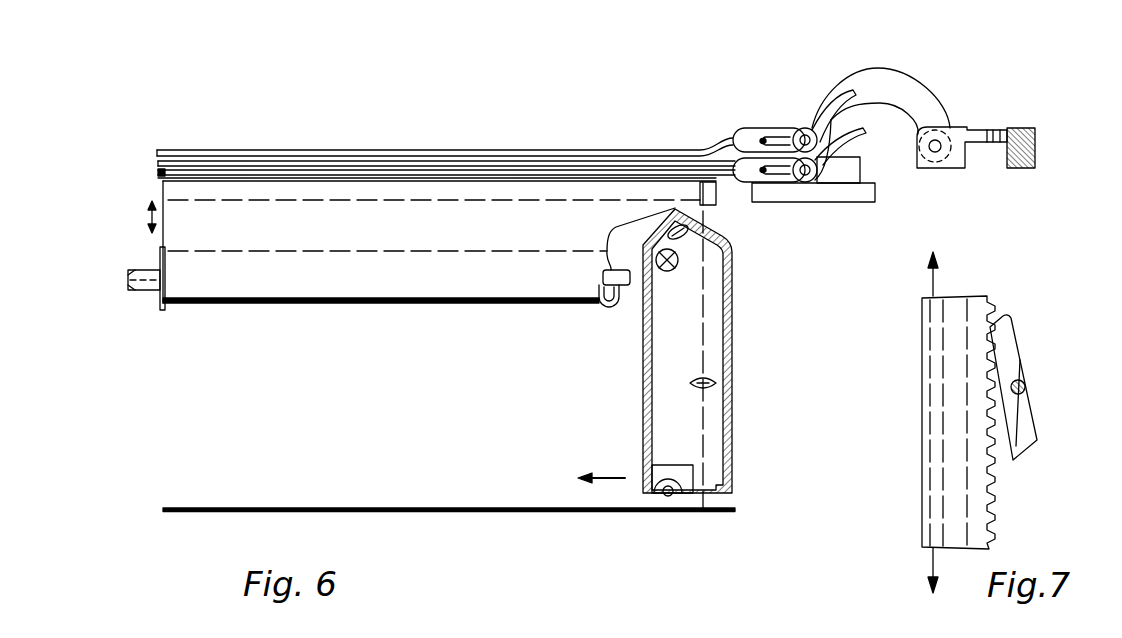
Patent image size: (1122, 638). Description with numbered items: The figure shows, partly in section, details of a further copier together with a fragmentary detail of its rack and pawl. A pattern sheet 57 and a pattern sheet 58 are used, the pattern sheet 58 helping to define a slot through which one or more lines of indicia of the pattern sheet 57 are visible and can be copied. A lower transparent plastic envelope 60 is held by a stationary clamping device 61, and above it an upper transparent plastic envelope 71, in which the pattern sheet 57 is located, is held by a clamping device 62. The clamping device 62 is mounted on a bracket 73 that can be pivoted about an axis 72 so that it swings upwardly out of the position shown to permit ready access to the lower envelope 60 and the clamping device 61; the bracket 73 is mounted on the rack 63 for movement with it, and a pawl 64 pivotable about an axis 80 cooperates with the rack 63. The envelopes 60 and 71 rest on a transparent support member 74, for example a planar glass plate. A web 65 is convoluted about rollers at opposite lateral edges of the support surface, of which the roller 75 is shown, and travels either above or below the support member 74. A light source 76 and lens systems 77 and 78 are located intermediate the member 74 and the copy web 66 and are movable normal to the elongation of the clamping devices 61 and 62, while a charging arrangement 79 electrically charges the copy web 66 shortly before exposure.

In FIG. 6, the pattern sheet 57 is at (185, 158).
In FIG. 6, the pattern sheet 58 is at (157, 172).
In FIG. 6, the lower transparent plastic envelope 60 is at (160, 179).
In FIG. 6, the clamping device 61 is at (777, 176).
In FIG. 6, the clamping device 62 is at (773, 132).
In FIG. 6, the rack 63 is at (968, 127).
In FIG. 7, the rack 63 is at (978, 520).
In FIG. 6, the pawl 64 is at (1026, 127).
In FIG. 7, the pawl 64 is at (1025, 425).
In FIG. 6, the web 65 is at (182, 237).
In FIG. 6, the copy web 66 is at (240, 508).
In FIG. 6, the upper transparent plastic envelope 71 is at (230, 148).
In FIG. 6, the axis 72 is at (938, 152).
In FIG. 6, the bracket 73 is at (880, 80).
In FIG. 6, the transparent support member 74 is at (178, 184).
In FIG. 6, the roller 75 is at (160, 300).
In FIG. 6, the light source 76 is at (679, 265).
In FIG. 6, the lens system 77 is at (690, 236).
In FIG. 6, the lens system 78 is at (717, 383).
In FIG. 6, the charging arrangement 79 is at (686, 472).
In FIG. 7, the axis 80 is at (1026, 388).